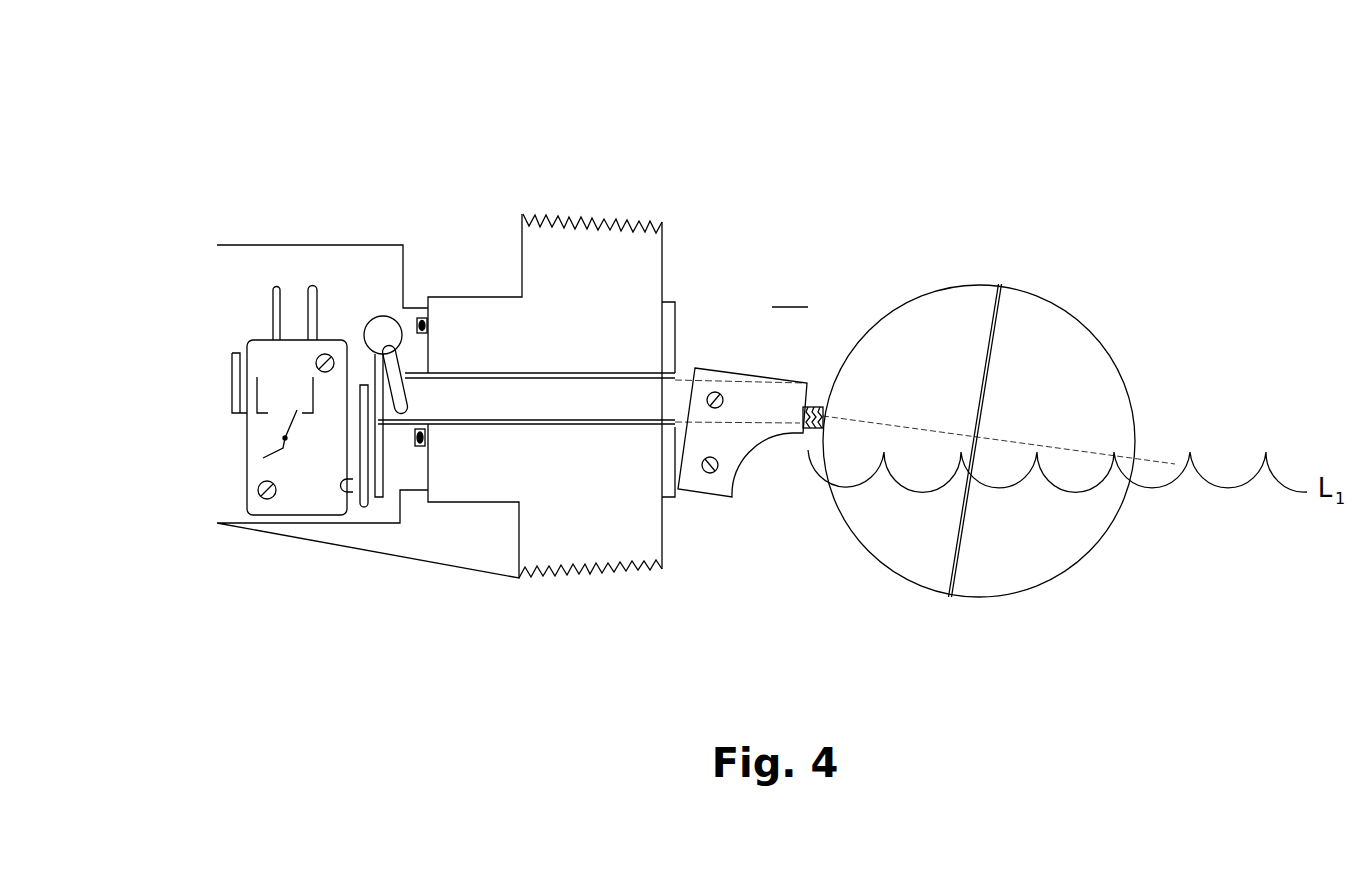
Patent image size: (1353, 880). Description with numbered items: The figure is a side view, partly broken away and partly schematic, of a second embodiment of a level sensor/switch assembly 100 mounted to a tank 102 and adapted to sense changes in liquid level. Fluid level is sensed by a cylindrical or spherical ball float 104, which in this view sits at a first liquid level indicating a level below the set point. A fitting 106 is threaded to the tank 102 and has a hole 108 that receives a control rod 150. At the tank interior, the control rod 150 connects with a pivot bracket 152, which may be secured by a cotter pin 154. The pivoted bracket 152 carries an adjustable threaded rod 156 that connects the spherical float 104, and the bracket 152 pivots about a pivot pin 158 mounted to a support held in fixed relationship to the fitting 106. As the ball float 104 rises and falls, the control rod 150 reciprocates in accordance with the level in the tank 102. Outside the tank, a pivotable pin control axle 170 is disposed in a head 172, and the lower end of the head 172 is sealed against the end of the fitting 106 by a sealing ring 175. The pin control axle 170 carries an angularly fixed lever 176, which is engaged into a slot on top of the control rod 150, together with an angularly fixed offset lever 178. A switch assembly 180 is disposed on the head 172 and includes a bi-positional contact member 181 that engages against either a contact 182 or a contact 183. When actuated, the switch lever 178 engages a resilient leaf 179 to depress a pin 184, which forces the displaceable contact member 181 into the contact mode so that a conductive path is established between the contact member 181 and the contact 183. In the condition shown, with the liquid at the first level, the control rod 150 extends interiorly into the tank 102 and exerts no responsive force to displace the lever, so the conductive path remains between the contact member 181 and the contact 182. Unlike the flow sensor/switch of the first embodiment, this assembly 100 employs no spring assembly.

The level sensor/switch assembly 100 is at (462, 400).
The tank 102 is at (914, 399).
The ball float 104 is at (1048, 332).
The fitting 106 is at (627, 258).
The hole 108 is at (483, 425).
The control rod 150 is at (567, 400).
The pivot bracket 152 is at (762, 418).
The cotter pin 154 is at (716, 394).
The adjustable threaded rod 156 is at (818, 405).
The pivot pin 158 is at (712, 472).
The pin control axle 170 is at (383, 328).
The head 172 is at (265, 242).
The sealing ring 175 is at (420, 442).
The angularly fixed lever 176 is at (390, 375).
The offset lever 178 is at (378, 428).
The resilient leaf 179 is at (363, 423).
The switch assembly 180 is at (250, 306).
The bi-positional contact member 181 is at (283, 430).
The contact 182 is at (300, 400).
The contact 183 is at (266, 400).
The pin 184 is at (348, 487).